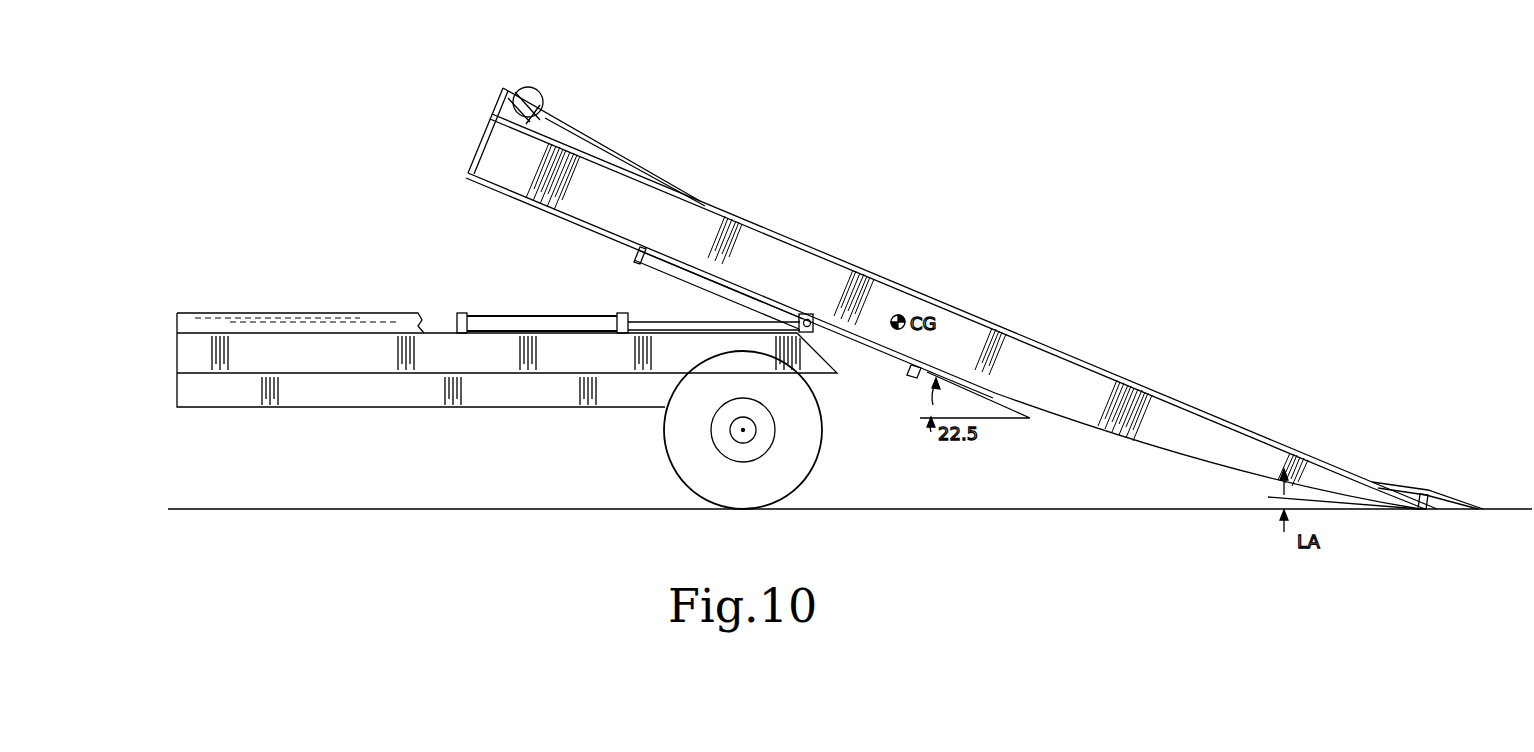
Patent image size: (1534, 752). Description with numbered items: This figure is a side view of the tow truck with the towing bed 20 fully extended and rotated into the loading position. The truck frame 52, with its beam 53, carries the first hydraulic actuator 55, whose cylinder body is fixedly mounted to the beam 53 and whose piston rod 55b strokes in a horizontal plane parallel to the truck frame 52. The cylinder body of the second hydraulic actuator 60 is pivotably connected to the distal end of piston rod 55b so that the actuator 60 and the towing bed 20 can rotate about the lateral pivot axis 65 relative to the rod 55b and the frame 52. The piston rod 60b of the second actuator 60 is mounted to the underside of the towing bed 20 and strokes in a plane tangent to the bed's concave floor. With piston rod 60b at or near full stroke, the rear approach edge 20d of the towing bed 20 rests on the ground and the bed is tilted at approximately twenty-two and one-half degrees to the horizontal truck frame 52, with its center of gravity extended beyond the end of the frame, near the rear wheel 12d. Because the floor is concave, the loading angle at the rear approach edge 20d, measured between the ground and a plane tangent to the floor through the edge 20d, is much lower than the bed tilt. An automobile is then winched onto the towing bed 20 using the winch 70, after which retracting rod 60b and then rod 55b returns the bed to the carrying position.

The trailer wheel 12d is at (747, 430).
The towing bed 20 is at (617, 157).
The rear approach edge 20d is at (1478, 509).
The truck frame 52 is at (522, 389).
The beam 53 is at (343, 313).
The hydraulic actuator 55 is at (522, 319).
The piston rod 55b is at (680, 321).
The second hydraulic actuator 60 is at (736, 291).
The piston rod 60b is at (881, 358).
The lateral pivot axis 65 is at (813, 320).
The winch 70 is at (540, 86).